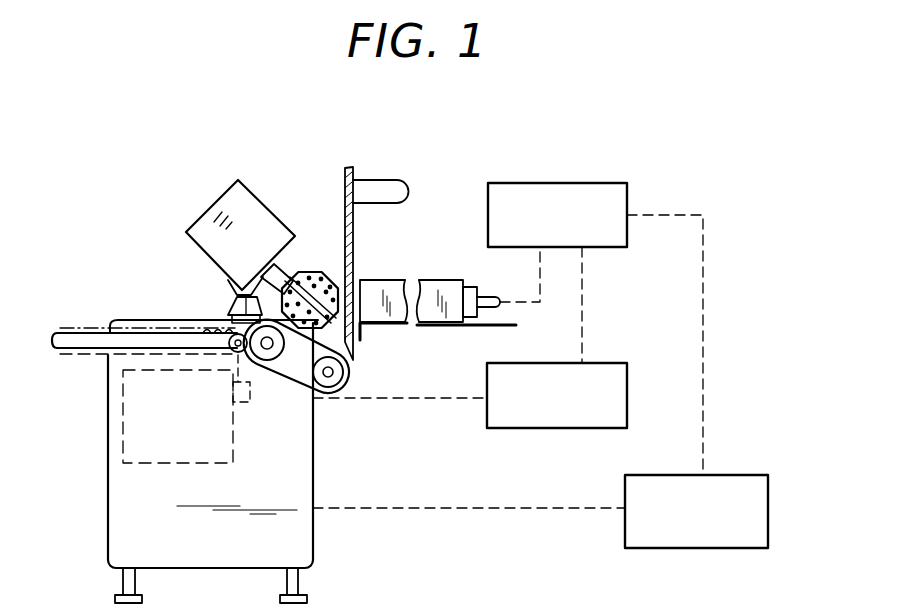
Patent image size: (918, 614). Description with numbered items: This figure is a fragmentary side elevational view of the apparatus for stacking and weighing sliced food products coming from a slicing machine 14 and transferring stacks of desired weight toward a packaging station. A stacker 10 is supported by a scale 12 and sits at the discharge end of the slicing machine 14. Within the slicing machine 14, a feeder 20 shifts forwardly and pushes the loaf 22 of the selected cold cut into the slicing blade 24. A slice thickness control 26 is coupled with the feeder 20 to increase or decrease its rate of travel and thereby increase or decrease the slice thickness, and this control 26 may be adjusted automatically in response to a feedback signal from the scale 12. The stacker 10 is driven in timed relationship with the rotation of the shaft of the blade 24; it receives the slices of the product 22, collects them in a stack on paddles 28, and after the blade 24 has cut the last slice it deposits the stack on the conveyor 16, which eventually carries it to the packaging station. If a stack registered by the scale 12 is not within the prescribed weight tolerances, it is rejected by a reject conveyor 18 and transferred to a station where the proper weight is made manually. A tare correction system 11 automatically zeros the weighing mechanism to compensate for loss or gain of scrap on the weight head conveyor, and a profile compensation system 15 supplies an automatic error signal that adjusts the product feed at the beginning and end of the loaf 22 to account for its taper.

The stacker 10 is at (267, 190).
The tare correction system 11 is at (662, 548).
The scale 12 is at (319, 483).
The slicing machine 14 is at (459, 276).
The profile compensation system 15 is at (552, 430).
The conveyor 16 is at (298, 378).
The reject conveyor 18 is at (100, 358).
The feeder 20 is at (477, 290).
The loaf 22 is at (378, 279).
The slicing blade 24 is at (358, 233).
The slice thickness control 26 is at (597, 183).
The paddles 28 is at (308, 272).